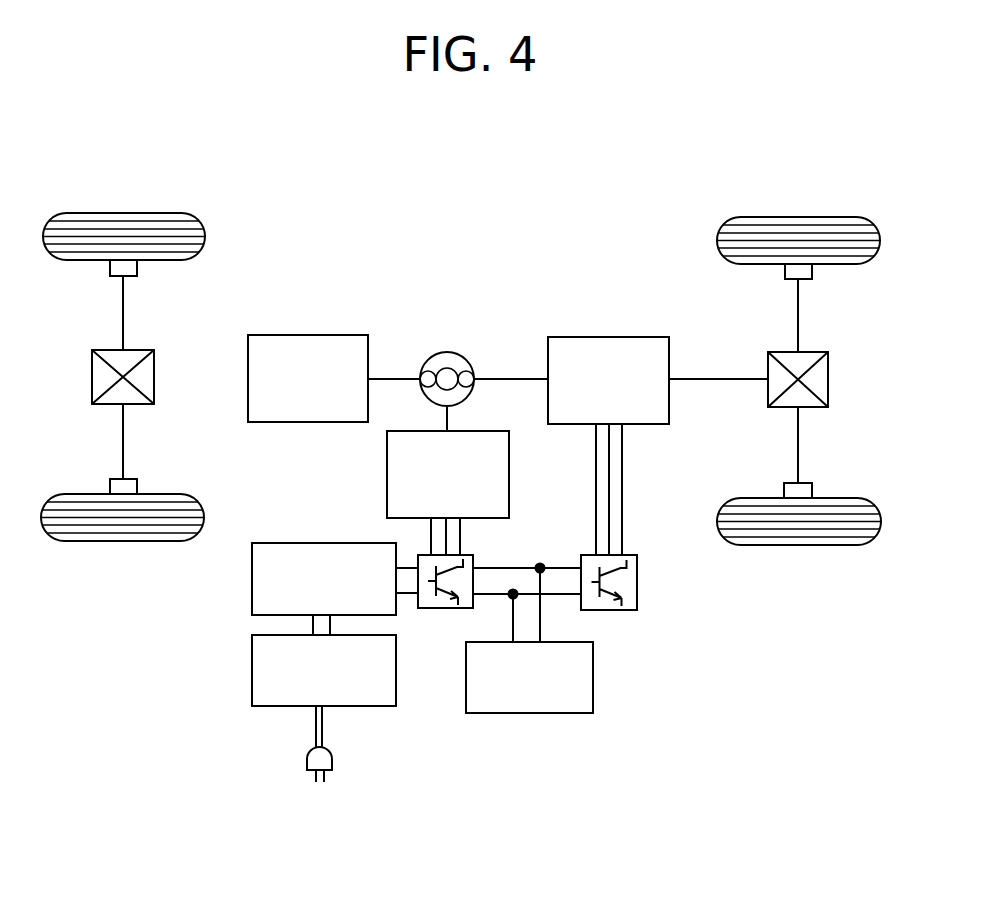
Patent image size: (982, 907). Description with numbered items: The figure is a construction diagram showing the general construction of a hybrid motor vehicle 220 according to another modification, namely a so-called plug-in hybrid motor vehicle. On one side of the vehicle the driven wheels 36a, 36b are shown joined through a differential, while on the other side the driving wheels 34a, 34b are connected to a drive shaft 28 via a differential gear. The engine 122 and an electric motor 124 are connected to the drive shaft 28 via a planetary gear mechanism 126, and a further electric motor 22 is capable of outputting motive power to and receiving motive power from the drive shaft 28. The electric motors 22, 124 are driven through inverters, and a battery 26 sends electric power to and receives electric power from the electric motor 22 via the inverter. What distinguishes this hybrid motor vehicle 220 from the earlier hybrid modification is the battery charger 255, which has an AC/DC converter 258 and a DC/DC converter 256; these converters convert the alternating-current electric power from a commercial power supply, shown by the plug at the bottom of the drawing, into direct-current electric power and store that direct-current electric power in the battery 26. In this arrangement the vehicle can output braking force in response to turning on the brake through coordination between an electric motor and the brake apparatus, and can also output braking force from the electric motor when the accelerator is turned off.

The hybrid motor vehicle 220 is at (438, 199).
The driven wheel 36a is at (123, 212).
The driven wheel 36b is at (122, 541).
The driving wheel 34a is at (800, 216).
The driving wheel 34b is at (798, 546).
The engine 122 is at (312, 334).
The planetary gear mechanism 126 is at (448, 350).
The electric motor 22 is at (609, 336).
The drive shaft 28 is at (718, 378).
The electric motor 124 is at (387, 480).
The battery 26 is at (593, 672).
The DC/DC converter 256 is at (252, 583).
The AC/DC converter 258 is at (252, 673).
The battery charger 255 is at (413, 712).